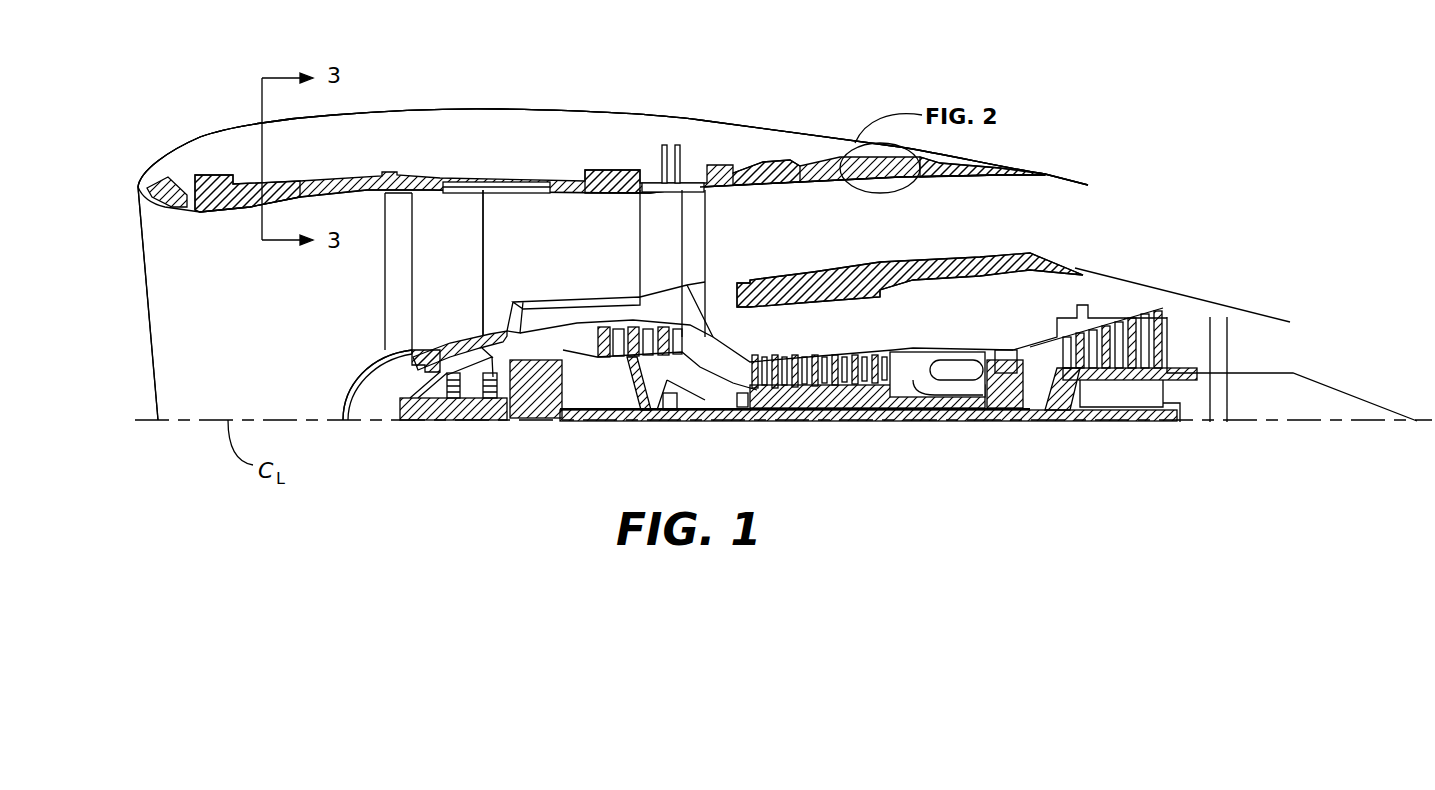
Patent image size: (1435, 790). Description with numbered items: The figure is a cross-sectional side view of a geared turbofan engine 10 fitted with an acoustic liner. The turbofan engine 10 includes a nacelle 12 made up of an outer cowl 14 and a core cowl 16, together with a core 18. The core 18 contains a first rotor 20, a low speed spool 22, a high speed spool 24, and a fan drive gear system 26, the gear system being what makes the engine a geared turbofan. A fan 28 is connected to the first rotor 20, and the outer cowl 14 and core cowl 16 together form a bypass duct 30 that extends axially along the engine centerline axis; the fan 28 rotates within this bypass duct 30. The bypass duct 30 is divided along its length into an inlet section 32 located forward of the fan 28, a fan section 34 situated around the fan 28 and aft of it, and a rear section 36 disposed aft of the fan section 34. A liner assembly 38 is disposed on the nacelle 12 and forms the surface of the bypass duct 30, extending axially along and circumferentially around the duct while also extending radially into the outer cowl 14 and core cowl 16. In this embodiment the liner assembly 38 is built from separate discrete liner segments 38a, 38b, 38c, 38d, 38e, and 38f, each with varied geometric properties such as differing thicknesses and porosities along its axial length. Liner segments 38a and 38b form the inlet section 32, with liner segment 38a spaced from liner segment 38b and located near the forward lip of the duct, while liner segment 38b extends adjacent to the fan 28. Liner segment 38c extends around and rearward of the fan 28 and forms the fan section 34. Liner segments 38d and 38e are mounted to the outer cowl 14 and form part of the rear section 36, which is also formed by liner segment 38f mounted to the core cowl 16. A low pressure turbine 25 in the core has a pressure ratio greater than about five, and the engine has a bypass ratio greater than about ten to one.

The turbofan engine 10 is at (881, 68).
The nacelle 12 is at (482, 90).
The outer cowl 14 is at (510, 112).
The core cowl 16 is at (1107, 266).
The core 18 is at (419, 435).
The first rotor 20 is at (503, 425).
The low speed spool 22 is at (640, 425).
The high speed spool 24 is at (893, 403).
The low pressure turbine 25 is at (1162, 340).
The fan drive gear system 26 is at (548, 425).
The fan 28 is at (470, 268).
The bypass duct 30 is at (178, 255).
The inlet section 32 is at (268, 360).
The fan section 34 is at (580, 214).
The rear section 36 is at (817, 198).
The liner assembly 38 is at (1094, 208).
The liner segment 38a is at (182, 188).
The liner segment 38b is at (270, 193).
The liner segment 38c is at (620, 170).
The liner segment 38d is at (780, 167).
The liner segment 38e is at (943, 160).
The liner segment 38f is at (898, 282).